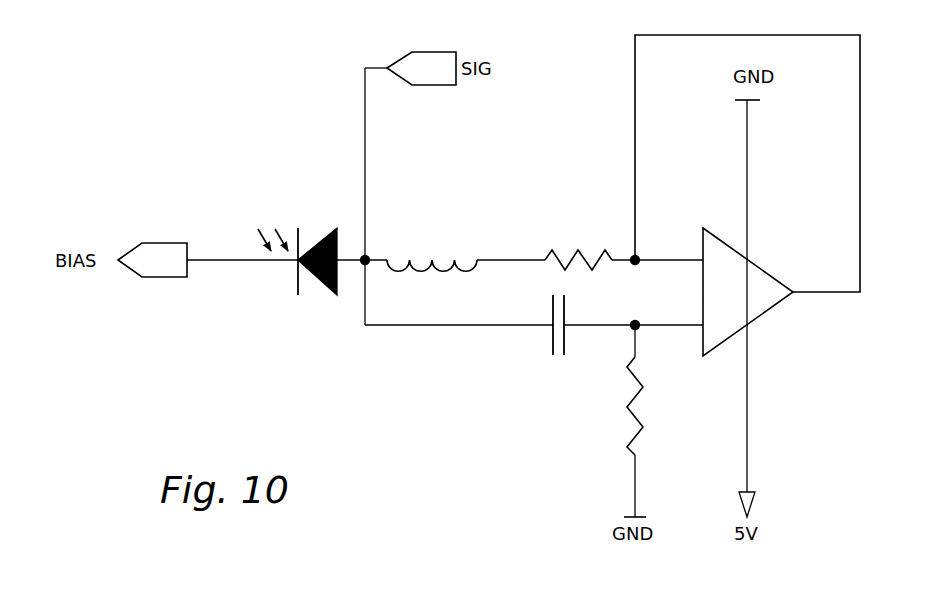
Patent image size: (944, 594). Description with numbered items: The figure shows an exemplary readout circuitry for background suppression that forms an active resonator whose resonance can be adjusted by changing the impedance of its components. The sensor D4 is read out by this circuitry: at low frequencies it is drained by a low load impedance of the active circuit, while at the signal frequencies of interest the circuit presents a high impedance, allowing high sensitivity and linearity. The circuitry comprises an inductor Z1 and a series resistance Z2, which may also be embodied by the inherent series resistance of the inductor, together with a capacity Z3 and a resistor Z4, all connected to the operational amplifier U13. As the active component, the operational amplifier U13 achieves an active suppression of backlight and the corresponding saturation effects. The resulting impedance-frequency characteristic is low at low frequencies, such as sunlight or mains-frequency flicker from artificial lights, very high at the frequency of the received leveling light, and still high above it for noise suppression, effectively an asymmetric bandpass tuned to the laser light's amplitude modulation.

The sensor D4 is at (300, 232).
The inductor Z1 is at (432, 236).
The series resistance Z2 is at (578, 235).
The capacity Z3 is at (559, 355).
The resistor Z4 is at (655, 406).
The operational amplifier U13 is at (762, 291).